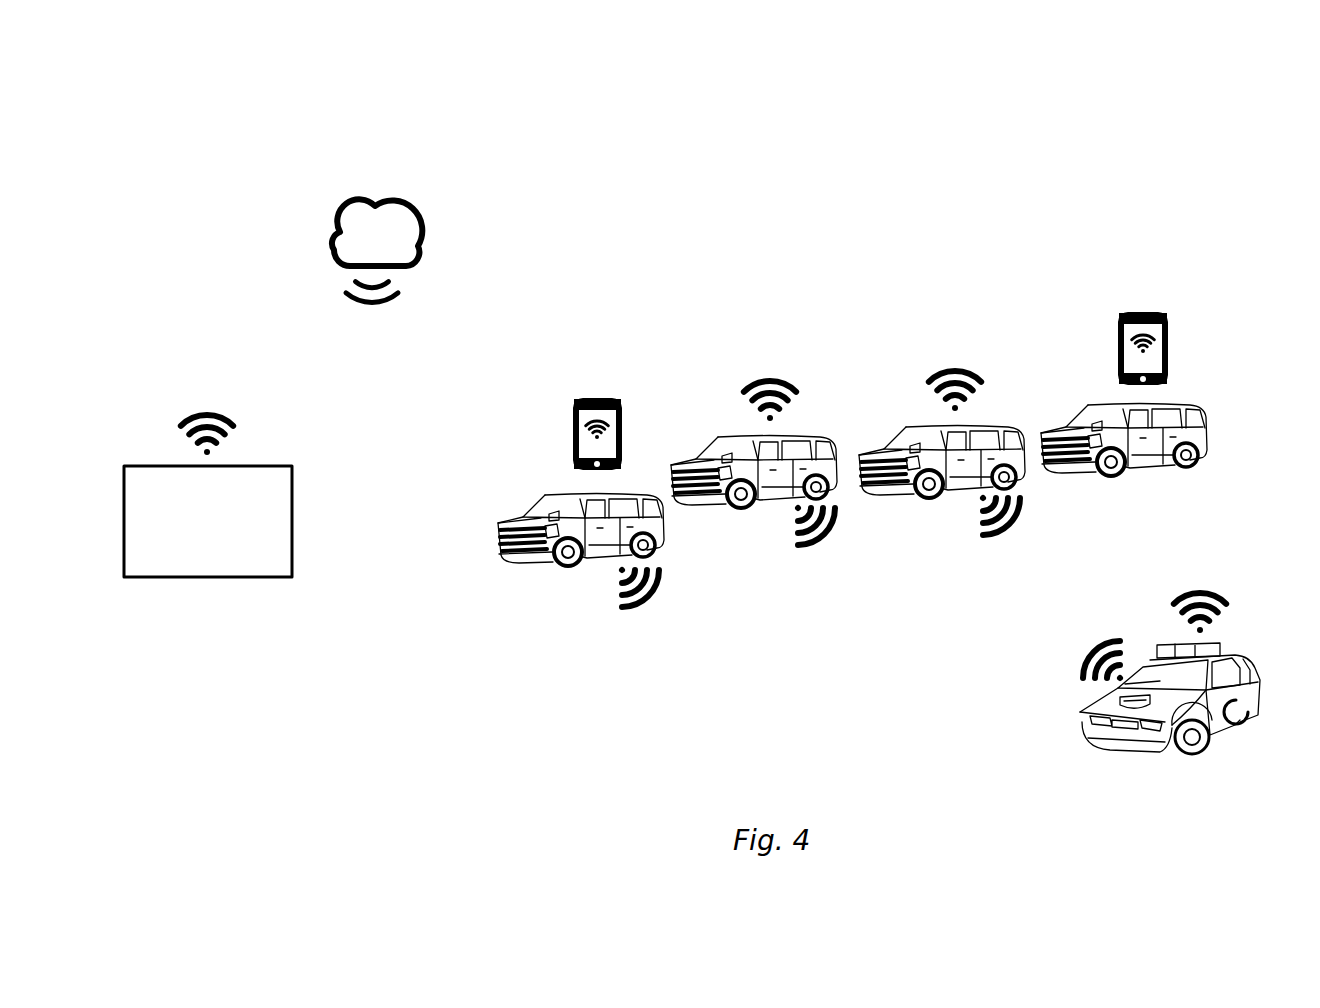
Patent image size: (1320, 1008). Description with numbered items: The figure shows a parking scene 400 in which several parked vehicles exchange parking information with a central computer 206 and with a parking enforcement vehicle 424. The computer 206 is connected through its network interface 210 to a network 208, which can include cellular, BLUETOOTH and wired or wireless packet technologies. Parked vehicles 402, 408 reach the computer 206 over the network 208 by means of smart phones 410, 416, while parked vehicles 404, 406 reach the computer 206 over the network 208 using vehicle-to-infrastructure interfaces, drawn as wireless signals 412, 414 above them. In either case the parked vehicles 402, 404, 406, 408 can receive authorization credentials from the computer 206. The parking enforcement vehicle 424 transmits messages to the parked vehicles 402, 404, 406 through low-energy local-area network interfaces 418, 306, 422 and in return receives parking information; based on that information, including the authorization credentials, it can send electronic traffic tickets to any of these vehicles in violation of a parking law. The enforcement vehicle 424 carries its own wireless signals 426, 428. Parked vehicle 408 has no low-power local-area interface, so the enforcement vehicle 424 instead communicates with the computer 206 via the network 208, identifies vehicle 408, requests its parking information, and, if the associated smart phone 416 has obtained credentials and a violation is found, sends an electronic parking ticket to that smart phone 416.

The parking scene 400 is at (805, 88).
The computer 206 is at (283, 570).
The network 208 is at (325, 257).
The network interface 210 is at (177, 428).
The parked vehicle 402 is at (533, 508).
The parked vehicle 404 is at (828, 437).
The parked vehicle 406 is at (1018, 425).
The parked vehicle 408 is at (1205, 410).
The smart phone 410 is at (575, 398).
The wireless transmission of second vehicle 412 is at (742, 397).
The wireless transmission of third vehicle 414 is at (927, 387).
The smart phone 416 is at (1118, 312).
The low-energy, local-area network interface 418 is at (622, 607).
The low-power, local-area wireless network interface 306 is at (790, 545).
The low-energy, local-area network interface 422 is at (982, 533).
The parking enforcement vehicle 424 is at (1223, 720).
The wireless signal of police vehicle 426 is at (1080, 682).
The wireless transmission of police vehicle 428 is at (1232, 608).